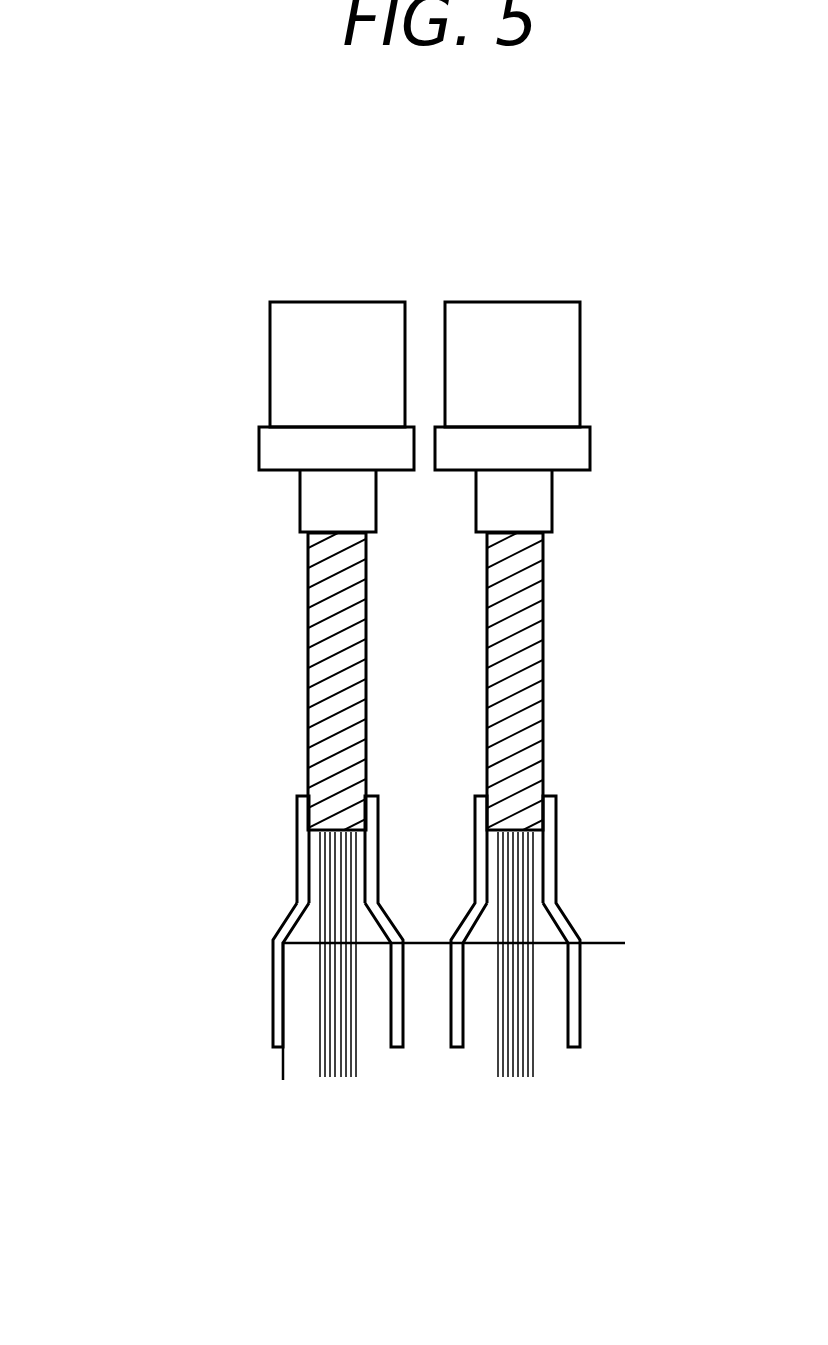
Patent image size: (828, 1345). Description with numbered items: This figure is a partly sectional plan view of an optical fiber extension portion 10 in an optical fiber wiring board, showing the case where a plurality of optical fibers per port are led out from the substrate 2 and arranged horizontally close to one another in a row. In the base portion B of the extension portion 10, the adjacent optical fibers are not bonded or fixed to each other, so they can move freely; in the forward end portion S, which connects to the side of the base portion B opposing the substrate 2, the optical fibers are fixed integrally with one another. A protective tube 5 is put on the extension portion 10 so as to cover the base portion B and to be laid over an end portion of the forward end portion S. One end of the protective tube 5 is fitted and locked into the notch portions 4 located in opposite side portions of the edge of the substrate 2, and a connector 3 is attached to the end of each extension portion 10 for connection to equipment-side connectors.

The substrate 2 is at (302, 1055).
The connector 3 is at (295, 398).
The notch portion 4 is at (447, 1095).
The protective tube 5 is at (280, 1002).
The extension portion 10 is at (167, 593).
The forward end portion S is at (310, 677).
The base portion B is at (320, 883).